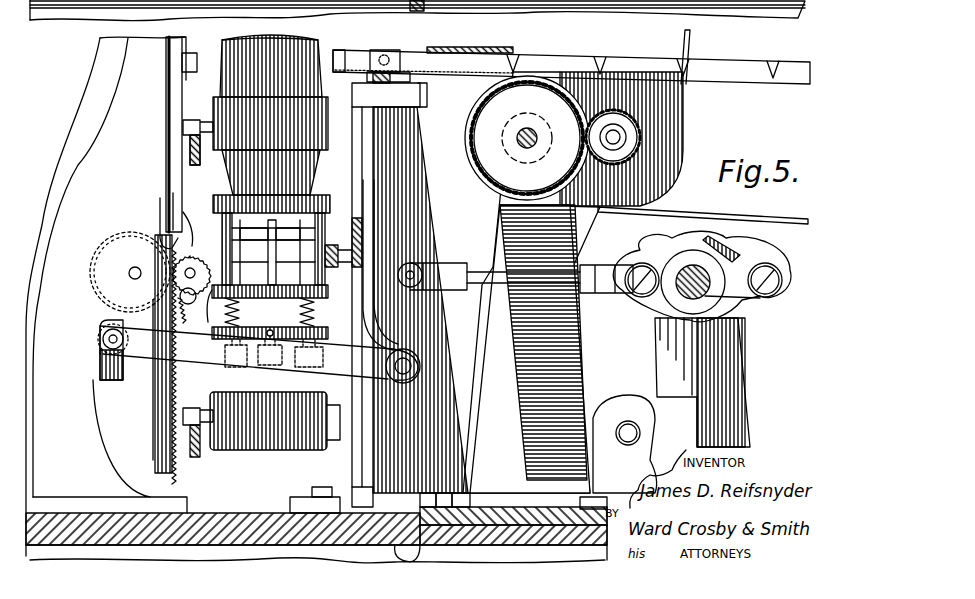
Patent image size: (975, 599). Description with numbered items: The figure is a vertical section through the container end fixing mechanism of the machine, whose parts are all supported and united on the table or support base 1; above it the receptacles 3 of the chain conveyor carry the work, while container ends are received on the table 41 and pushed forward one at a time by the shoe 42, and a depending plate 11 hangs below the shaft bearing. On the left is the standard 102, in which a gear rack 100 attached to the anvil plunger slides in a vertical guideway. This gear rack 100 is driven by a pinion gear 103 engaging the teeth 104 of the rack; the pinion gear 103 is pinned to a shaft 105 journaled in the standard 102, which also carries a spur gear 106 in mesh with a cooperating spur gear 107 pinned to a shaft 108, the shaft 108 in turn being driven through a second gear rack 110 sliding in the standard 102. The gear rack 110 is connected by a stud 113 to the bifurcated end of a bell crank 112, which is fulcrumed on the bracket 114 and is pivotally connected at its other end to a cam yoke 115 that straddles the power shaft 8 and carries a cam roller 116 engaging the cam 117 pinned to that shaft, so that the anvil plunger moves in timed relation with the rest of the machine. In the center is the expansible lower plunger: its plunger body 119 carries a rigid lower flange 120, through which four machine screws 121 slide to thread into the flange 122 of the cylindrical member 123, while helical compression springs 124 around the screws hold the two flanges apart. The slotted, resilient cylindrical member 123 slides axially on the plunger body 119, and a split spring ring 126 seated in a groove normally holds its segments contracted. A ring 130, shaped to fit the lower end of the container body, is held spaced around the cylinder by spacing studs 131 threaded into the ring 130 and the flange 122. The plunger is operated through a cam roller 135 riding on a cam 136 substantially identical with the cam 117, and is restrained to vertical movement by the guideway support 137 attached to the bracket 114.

The support base 1 is at (207, 523).
The receptacles 3 is at (250, 438).
The power shaft 8 is at (703, 298).
The supporting plate 11 is at (697, 388).
The table 41 is at (398, 60).
The shoe 42 is at (343, 55).
The gear rack 100 is at (154, 396).
The standard 102 is at (128, 62).
The pinion gear 103 is at (188, 249).
The teeth 104 is at (172, 458).
The shaft 105 is at (175, 268).
The spur gear 106 is at (192, 305).
The spur gear 107 is at (108, 298).
The shaft 108 is at (133, 268).
The gear rack 110 is at (108, 359).
The bell crank 112 is at (199, 355).
The stud 113 is at (110, 339).
The bracket 114 is at (479, 296).
The cam yoke 115 is at (458, 264).
The cam roller 116 is at (640, 267).
The cam 117 is at (736, 264).
The plunger body 119 is at (300, 295).
The flange 120 is at (318, 333).
The machine screws 121 is at (292, 383).
The flange 122 is at (220, 300).
The cylindrical member 123 is at (270, 288).
The helical compression springs 124 is at (316, 310).
The split spring ring 126 is at (293, 235).
The ring 130 is at (217, 195).
The spacing studs 131 is at (222, 218).
The cam roller 135 is at (745, 291).
The cam 136 is at (727, 248).
The guideway support 137 is at (358, 265).